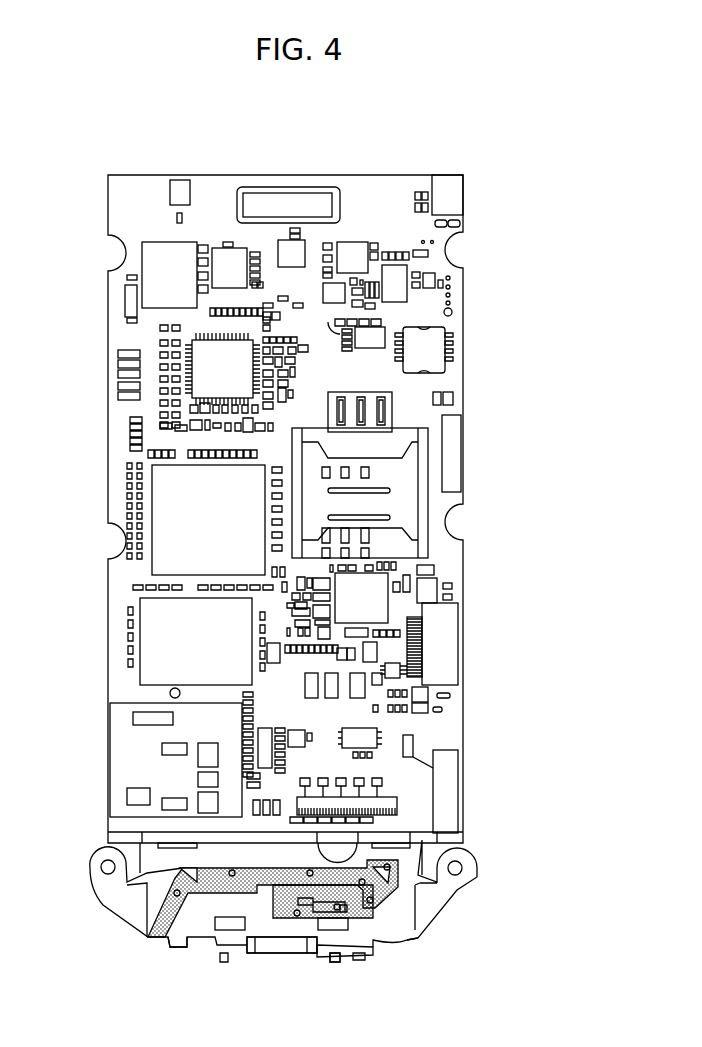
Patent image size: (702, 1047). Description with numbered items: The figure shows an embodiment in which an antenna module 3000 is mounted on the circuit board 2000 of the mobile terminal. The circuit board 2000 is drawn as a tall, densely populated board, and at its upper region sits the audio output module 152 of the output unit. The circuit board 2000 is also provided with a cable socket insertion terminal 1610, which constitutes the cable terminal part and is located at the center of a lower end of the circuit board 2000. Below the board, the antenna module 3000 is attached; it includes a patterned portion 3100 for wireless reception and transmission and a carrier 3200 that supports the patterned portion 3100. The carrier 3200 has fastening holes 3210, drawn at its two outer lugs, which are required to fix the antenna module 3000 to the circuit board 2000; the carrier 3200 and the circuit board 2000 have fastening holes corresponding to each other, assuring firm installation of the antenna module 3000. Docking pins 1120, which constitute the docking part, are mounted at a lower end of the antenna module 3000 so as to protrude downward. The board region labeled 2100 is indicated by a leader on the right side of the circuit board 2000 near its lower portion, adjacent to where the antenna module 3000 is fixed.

The circuit board 2000 is at (119, 133).
The audio output module 152 is at (288, 178).
The printed circuit board 2100 is at (447, 728).
The carrier 3200 is at (117, 893).
The fastening holes 3210 is at (455, 866).
The patterned portion 3100 is at (173, 938).
The cable socket insertion terminal 1610 is at (281, 954).
The docking pins 1120 is at (335, 963).
The antenna module 3000 is at (430, 932).